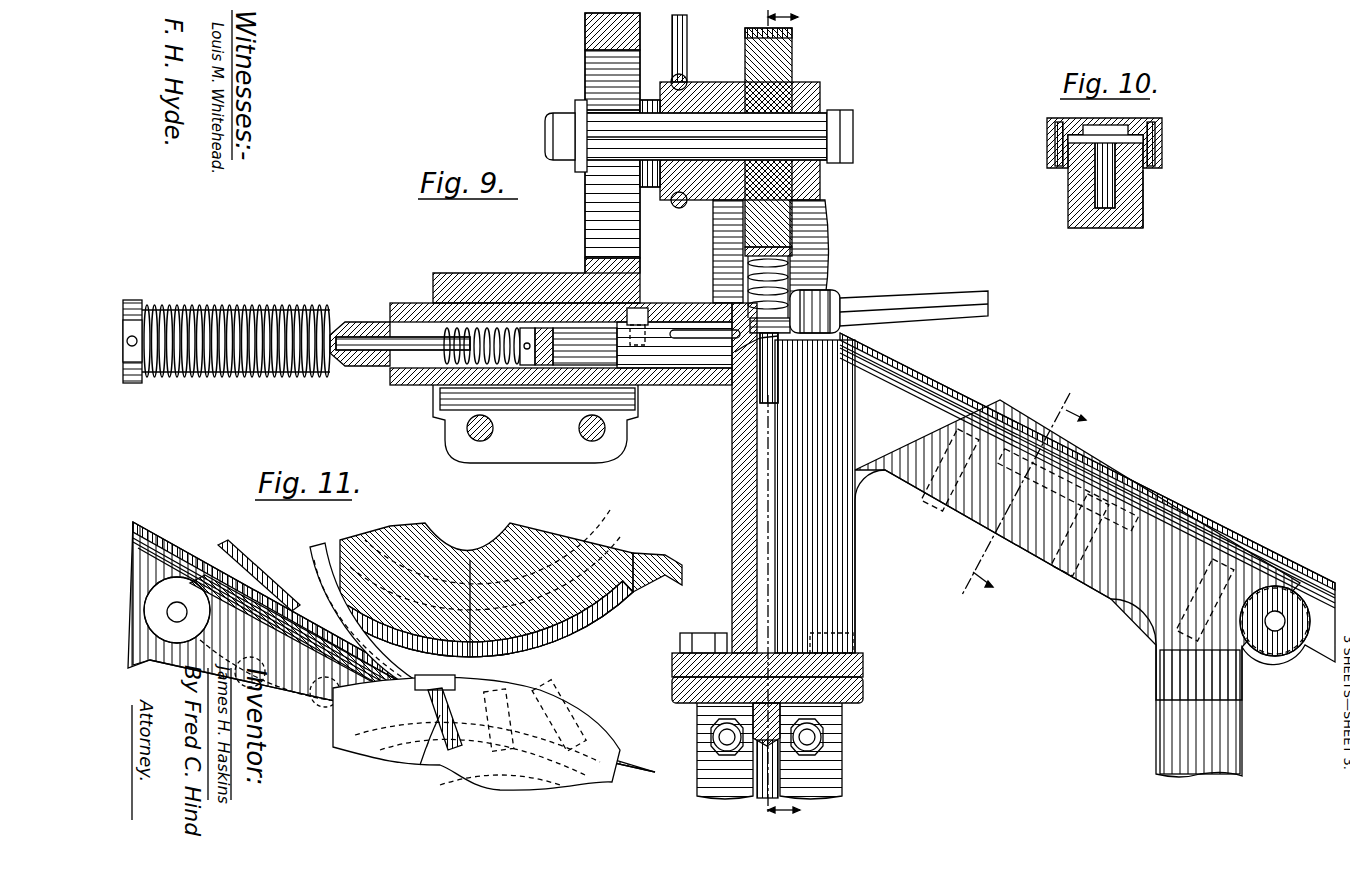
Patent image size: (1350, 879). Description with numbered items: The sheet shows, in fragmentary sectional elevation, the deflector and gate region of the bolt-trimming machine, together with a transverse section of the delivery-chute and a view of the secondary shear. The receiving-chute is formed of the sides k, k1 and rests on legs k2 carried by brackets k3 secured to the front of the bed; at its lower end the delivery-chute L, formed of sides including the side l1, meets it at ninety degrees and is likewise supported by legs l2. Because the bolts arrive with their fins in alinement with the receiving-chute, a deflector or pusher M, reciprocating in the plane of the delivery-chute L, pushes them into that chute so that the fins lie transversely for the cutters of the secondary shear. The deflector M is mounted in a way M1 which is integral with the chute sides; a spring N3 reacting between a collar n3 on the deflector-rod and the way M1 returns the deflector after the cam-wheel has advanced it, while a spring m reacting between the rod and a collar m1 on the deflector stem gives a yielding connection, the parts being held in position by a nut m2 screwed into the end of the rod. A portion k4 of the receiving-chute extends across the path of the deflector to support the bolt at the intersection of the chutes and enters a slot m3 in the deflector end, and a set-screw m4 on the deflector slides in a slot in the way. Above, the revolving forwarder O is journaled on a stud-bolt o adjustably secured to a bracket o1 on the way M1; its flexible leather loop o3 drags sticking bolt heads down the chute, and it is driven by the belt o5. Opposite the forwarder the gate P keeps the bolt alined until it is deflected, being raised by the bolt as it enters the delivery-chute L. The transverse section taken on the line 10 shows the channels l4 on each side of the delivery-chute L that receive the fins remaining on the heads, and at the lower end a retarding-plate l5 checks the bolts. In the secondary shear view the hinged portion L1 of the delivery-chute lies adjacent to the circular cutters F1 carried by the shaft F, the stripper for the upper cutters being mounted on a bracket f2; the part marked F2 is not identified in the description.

In FIG. 9, the stud-bolt o is at (745, 52).
In FIG. 9, the bracket o1 is at (585, 215).
In FIG. 9, the loop o3 is at (745, 30).
In FIG. 9, the belt o5 is at (679, 206).
In FIG. 9, the second forwarder O is at (800, 84).
In FIG. 9, the side of receiving-chute k is at (825, 210).
In FIG. 9, the side of receiving-chute k1 is at (800, 268).
In FIG. 9, the legs of receiving-chute k2 is at (855, 590).
In FIG. 9, the brackets k3 is at (772, 716).
In FIG. 9, the portion of receiving-chute k4 is at (735, 390).
In FIG. 9, the gate P is at (915, 305).
In FIG. 9, the deflector M is at (547, 424).
In FIG. 9, the way M1 is at (412, 303).
In FIG. 9, the spring m is at (482, 366).
In FIG. 9, the collar m1 is at (528, 366).
In FIG. 9, the nut m2 is at (556, 366).
In FIG. 9, the slot m3 is at (695, 330).
In FIG. 9, the set-screw m4 is at (648, 303).
In FIG. 9, the collar n3 is at (131, 300).
In FIG. 9, the spring N3 is at (238, 306).
In FIG. 9, the delivery-chute L is at (1092, 600).
In FIG. 9, the hinged portion of delivery-chute L1 is at (1310, 662).
In FIG. 11, the hinged portion of delivery-chute L1 is at (338, 688).
In FIG. 9, the side of delivery-chute l1 is at (1110, 440).
In FIG. 10, the side of delivery-chute l1 is at (1143, 200).
In FIG. 11, the side of delivery-chute l1 is at (150, 540).
In FIG. 9, the legs of delivery-chute l2 is at (1156, 713).
In FIG. 10, the legs of delivery-chute l2 is at (1068, 200).
In FIG. 9, the channels l4 is at (1187, 487).
In FIG. 10, the channels l4 is at (1047, 130).
In FIG. 11, the channels l4 is at (180, 565).
In FIG. 11, the retarding-plate l5 is at (226, 543).
In FIG. 9, the section line 10 is at (1036, 498).
In FIG. 11, the shaft F is at (470, 545).
In FIG. 11, the circular cutters F1 is at (630, 555).
In FIG. 11, the dial segment F2 is at (588, 772).
In FIG. 11, the bracket f2 is at (650, 590).